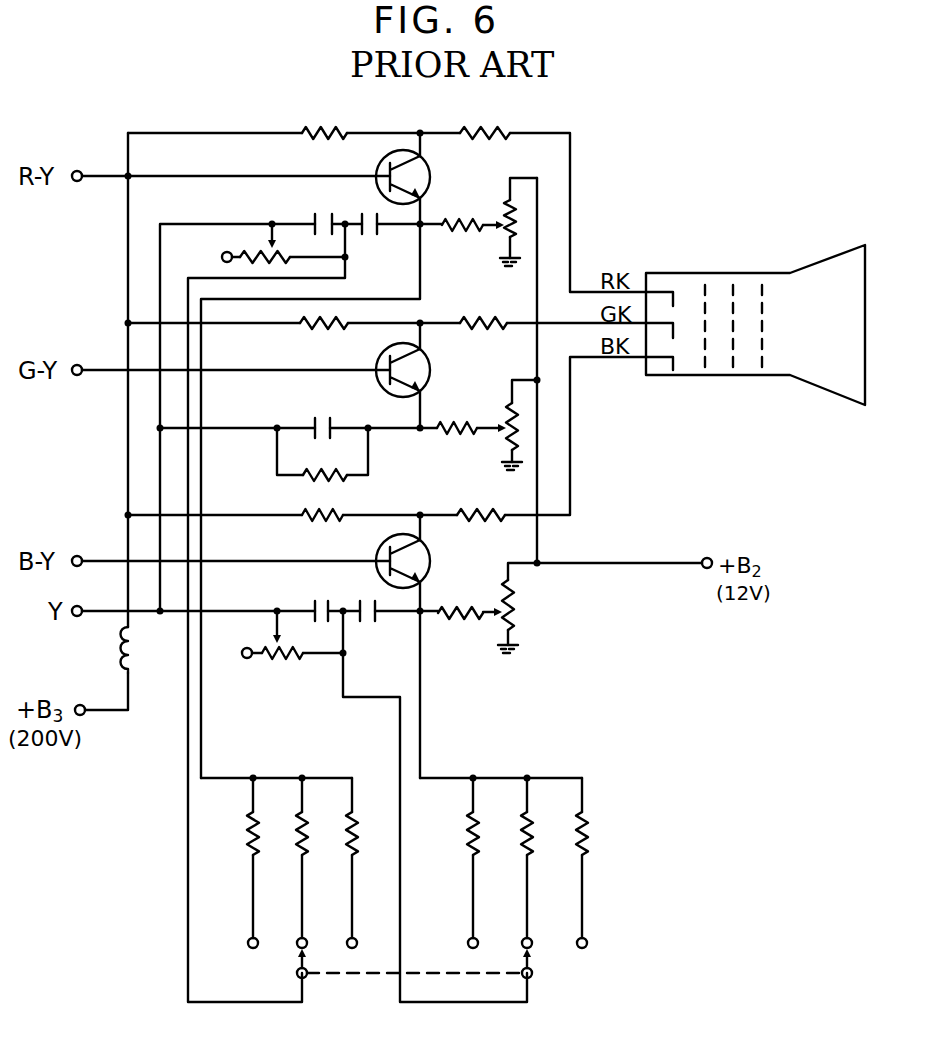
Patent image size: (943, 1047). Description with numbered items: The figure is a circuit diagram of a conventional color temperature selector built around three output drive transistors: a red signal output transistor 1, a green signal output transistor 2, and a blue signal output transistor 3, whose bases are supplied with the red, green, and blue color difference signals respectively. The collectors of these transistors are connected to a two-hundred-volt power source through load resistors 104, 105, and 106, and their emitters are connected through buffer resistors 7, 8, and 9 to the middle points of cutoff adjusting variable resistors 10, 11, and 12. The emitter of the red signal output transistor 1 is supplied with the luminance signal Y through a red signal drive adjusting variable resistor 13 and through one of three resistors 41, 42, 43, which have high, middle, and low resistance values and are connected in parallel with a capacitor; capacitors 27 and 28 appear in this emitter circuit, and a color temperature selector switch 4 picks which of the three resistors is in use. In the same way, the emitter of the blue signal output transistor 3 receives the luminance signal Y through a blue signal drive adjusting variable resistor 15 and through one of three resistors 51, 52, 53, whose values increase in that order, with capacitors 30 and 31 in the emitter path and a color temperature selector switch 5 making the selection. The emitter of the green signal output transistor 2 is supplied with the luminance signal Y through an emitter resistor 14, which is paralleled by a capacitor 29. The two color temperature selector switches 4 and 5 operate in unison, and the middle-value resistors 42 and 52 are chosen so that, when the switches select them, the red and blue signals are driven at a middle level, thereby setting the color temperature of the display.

The red signal output transistor 1 is at (430, 175).
The green signal output transistor 2 is at (430, 372).
The blue signal output transistor 3 is at (432, 569).
The color temperature selector switch 4 is at (298, 972).
The color temperature selector switch 5 is at (536, 968).
The buffer resistor 7 is at (446, 228).
The buffer resistor 8 is at (464, 433).
The buffer resistor 9 is at (446, 616).
The cutoff adjusting variable resistor 10 is at (510, 202).
The cutoff adjusting variable resistor 11 is at (512, 404).
The cutoff adjusting variable resistor 12 is at (516, 590).
The red signal drive adjusting variable resistor 13 is at (258, 248).
The emitter resistor 14 is at (322, 454).
The blue signal drive adjusting variable resistor 15 is at (296, 658).
The capacitor 27 is at (321, 209).
The capacitor 28 is at (380, 226).
The capacitor 29 is at (338, 422).
The capacitor 30 is at (358, 616).
The capacitor 31 is at (330, 580).
The resistor 41 is at (250, 832).
The resistor 42 is at (300, 832).
The resistor 43 is at (350, 832).
The resistor 51 is at (470, 832).
The resistor 52 is at (524, 832).
The resistor 53 is at (580, 832).
The load resistor 104 is at (306, 108).
The load resistor 105 is at (344, 326).
The load resistor 106 is at (342, 519).